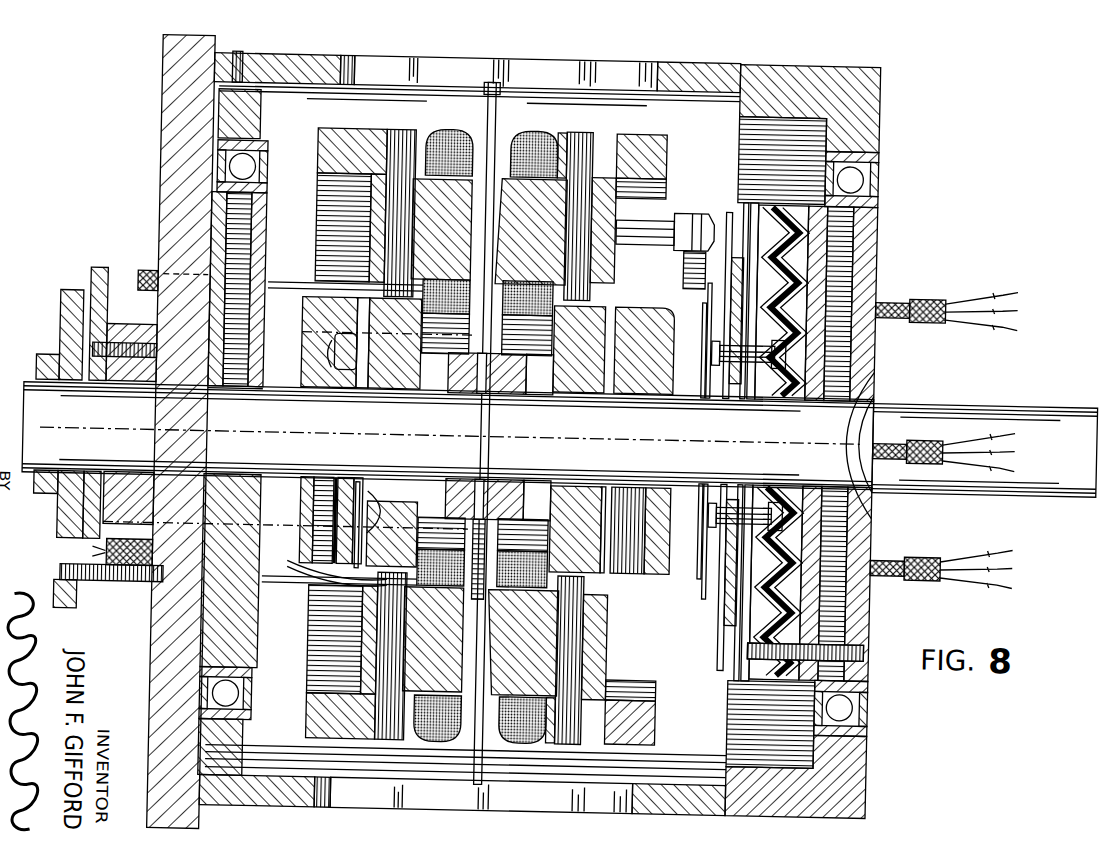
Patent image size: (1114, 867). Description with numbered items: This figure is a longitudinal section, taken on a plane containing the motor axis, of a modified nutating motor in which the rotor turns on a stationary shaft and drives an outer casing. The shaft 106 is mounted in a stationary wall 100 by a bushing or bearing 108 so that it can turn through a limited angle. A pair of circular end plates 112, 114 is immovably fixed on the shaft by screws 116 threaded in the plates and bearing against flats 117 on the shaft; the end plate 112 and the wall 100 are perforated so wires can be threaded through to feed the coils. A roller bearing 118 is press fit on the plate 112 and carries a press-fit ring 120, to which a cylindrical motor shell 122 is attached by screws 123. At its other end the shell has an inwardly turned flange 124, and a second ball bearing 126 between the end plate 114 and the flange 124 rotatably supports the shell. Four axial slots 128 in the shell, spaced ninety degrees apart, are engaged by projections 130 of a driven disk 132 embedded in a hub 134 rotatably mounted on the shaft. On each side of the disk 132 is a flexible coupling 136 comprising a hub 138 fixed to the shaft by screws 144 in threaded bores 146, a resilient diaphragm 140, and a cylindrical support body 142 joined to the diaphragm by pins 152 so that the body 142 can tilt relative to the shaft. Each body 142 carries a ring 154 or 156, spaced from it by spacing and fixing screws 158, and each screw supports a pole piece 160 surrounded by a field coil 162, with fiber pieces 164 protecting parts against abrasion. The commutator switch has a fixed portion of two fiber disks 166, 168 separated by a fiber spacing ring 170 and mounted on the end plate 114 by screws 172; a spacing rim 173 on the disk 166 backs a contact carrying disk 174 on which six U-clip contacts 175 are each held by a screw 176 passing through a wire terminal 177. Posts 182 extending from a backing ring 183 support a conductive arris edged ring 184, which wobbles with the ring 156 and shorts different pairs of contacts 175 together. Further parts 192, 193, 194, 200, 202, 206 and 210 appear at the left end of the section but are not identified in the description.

The stationary wall 100 is at (160, 654).
The shaft 106 is at (1028, 412).
The bushing or bearing 108 is at (182, 484).
The end plate 112 is at (254, 620).
The end plate 114 is at (862, 508).
The screws 116 is at (255, 222).
The flats 117 is at (215, 393).
The roller bearing 118 is at (262, 180).
The ring 120 is at (257, 114).
The cylindrical motor shell 122 is at (872, 63).
The screws 123 is at (237, 57).
The inwardly turned flange 124 is at (862, 137).
The second ball bearing 126 is at (868, 190).
The slots 128 is at (548, 62).
The projections 130 is at (493, 86).
The driven disk 132 is at (485, 130).
The hub 134 is at (480, 396).
The flexible coupling 136 is at (305, 383).
The hub or cylindrical body 138 is at (310, 492).
The intermediate circular resilient diaphragm 140 is at (400, 394).
The cylindrical support body 142 is at (456, 395).
The screws 144 is at (372, 494).
The threaded bores 146 is at (322, 578).
The pins 152 is at (330, 356).
The ring 154 is at (318, 152).
The ring 156 is at (655, 158).
The spacing and fixing screws 158 is at (396, 134).
The pole piece 160 is at (549, 238).
The field coil 162 is at (462, 134).
The fiber pieces 164 is at (520, 126).
The fiber disk 166 is at (741, 200).
The fiber disk 168 is at (812, 203).
The fiber spacing ring 170 is at (788, 206).
The screws 172 is at (865, 648).
The spacing rim 173 is at (745, 396).
The contact carrying disk 174 is at (706, 396).
The contacts 175 is at (724, 212).
The screw 176 is at (752, 500).
The wire terminal 177 is at (720, 500).
The posts 182 is at (642, 232).
The backing ring 183 is at (678, 262).
The conductive arris edged ring 184 is at (693, 204).
The screw 192 is at (64, 582).
The packing 193 is at (100, 592).
The block 194 is at (60, 620).
The collar 200 is at (70, 534).
The collar 202 is at (38, 366).
The clamp 206 is at (98, 280).
The screw 210 is at (145, 350).